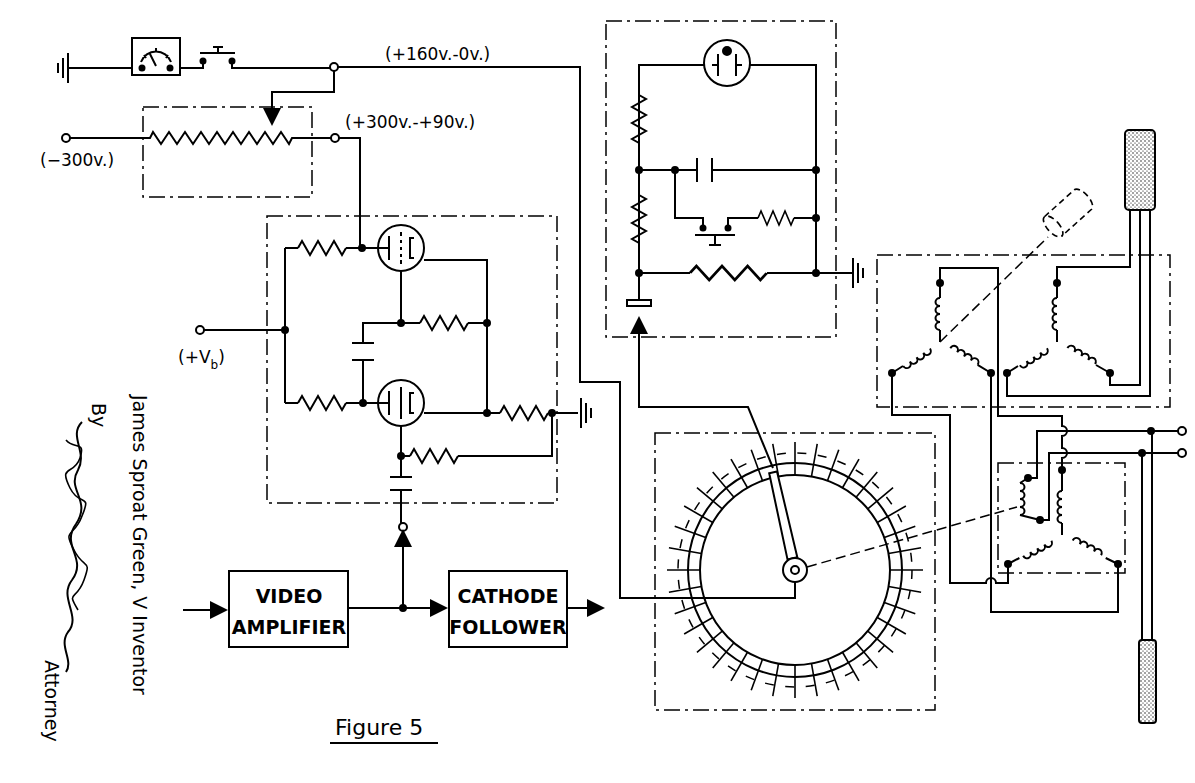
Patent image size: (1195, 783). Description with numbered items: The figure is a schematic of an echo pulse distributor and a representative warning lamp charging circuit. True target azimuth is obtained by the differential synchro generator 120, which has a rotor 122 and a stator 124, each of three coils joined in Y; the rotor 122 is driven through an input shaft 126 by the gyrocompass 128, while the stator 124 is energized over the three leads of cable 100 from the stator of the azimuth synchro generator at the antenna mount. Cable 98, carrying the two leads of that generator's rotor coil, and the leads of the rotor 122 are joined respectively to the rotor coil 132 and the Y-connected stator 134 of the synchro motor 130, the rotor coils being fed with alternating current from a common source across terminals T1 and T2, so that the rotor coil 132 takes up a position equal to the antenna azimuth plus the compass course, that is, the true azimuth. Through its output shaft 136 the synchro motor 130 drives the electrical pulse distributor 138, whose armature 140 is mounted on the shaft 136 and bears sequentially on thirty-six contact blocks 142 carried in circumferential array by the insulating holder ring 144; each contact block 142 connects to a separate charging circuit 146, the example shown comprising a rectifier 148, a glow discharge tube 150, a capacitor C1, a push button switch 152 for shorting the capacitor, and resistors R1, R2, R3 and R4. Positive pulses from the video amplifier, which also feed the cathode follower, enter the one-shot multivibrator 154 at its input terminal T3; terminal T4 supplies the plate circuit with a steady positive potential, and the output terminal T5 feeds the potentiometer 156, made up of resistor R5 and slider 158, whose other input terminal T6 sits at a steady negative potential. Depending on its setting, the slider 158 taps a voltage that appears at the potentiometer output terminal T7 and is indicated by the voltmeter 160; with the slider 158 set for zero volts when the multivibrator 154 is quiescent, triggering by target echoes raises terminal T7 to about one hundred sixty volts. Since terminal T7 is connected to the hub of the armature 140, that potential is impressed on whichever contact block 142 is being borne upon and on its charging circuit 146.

The cable 98 is at (1139, 673).
The cable 100 is at (1124, 148).
The differential synchro generator 120 is at (1023, 306).
The rotor 122 is at (921, 352).
The stator 124 is at (1063, 311).
The input shaft 126 is at (1044, 241).
The gyrocompass 128 is at (1061, 201).
The synchro motor 130 is at (1061, 522).
The rotor coil 132 is at (1016, 480).
The stator 134 is at (1066, 513).
The output shaft 136 is at (970, 516).
The electrical pulse distributor 138 is at (824, 571).
The armature 140 is at (778, 522).
The contact block 142 is at (803, 474).
The holder ring 144 is at (795, 570).
The charging circuit 146 is at (757, 179).
The rectifier 148 is at (652, 304).
The glow discharge tube 150 is at (743, 52).
The push button switch 152 is at (735, 236).
The one-shot multivibrator 154 is at (264, 408).
The potentiometer 156 is at (202, 159).
The slider 158 is at (270, 119).
The voltmeter 160 is at (135, 42).
The terminal T1 is at (1182, 426).
The terminal T2 is at (1181, 457).
The input terminal T3 is at (408, 527).
The terminal T4 is at (199, 325).
The output terminal T5 is at (335, 142).
The input terminal T6 is at (64, 134).
The potentiometer output terminal T7 is at (336, 62).
The resistor R1 is at (648, 228).
The resistor R2 is at (648, 112).
The resistor R3 is at (759, 277).
The resistor R4 is at (775, 210).
The resistor R5 is at (222, 146).
The capacitor C1 is at (713, 158).